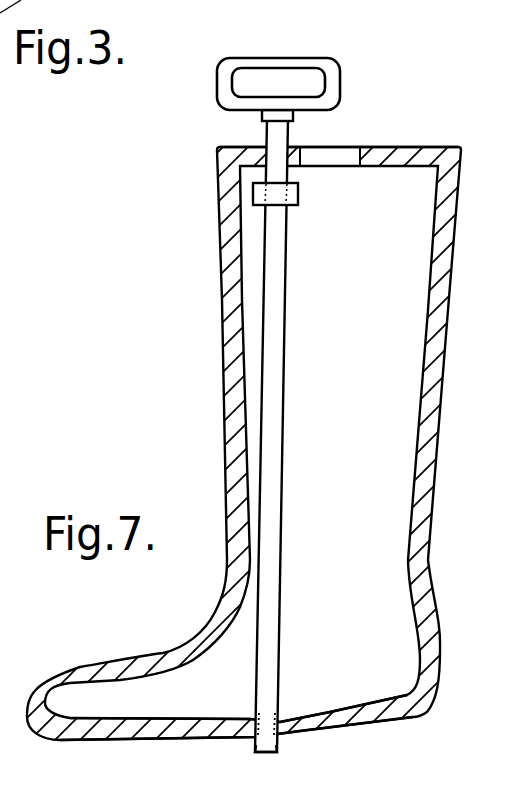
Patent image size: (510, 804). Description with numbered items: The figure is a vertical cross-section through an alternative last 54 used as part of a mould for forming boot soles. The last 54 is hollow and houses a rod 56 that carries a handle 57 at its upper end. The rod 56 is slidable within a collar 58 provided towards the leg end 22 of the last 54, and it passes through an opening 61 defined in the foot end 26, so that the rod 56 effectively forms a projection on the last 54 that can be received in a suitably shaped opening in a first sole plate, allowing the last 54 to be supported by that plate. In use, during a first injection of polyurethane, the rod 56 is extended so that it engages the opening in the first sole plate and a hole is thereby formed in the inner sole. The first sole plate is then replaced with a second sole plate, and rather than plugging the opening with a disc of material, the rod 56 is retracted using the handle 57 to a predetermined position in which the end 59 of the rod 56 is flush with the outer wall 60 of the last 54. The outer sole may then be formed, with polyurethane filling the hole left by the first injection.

The handle 57 is at (256, 62).
The leg end 22 is at (219, 147).
The collar 58 is at (253, 207).
The rod 56 is at (270, 373).
The last 54 is at (212, 424).
The opening 61 is at (283, 707).
The foot end 26 is at (127, 723).
The outer wall 60 is at (210, 742).
The end of the rod 59 is at (272, 756).